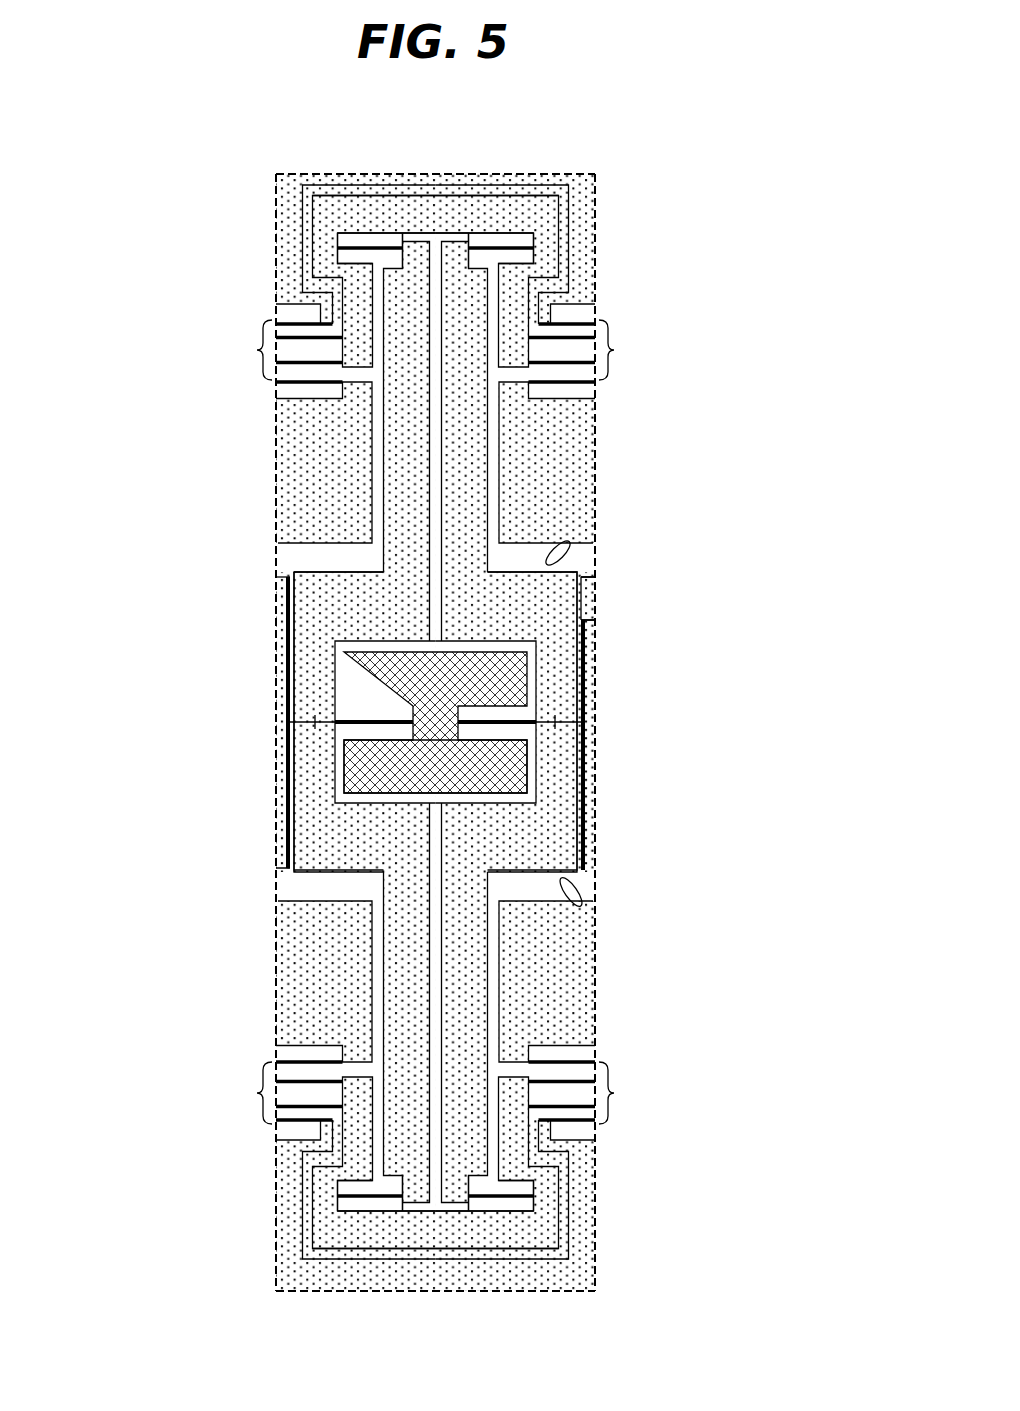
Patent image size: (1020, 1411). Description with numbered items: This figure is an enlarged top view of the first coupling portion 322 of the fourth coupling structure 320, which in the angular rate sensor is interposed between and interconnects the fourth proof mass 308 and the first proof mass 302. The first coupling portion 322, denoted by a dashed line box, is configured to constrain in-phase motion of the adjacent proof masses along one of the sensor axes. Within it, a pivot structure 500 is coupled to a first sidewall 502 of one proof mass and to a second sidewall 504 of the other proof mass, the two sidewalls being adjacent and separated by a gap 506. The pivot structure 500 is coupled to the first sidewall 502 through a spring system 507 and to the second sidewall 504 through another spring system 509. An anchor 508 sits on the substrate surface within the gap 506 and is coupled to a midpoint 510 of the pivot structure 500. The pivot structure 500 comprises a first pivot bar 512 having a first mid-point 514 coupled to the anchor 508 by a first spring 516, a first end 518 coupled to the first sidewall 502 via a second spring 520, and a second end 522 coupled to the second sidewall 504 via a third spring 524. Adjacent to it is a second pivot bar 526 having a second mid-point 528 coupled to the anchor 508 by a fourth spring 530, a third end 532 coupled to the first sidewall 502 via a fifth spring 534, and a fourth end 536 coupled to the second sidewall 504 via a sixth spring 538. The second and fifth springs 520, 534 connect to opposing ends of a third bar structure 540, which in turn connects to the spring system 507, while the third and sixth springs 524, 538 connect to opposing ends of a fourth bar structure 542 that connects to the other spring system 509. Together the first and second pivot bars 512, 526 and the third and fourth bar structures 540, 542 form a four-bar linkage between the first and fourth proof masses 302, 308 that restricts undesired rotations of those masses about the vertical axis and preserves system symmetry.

The fourth coupling structure 320 is at (252, 110).
The first proof mass 302 is at (590, 213).
The fourth proof mass 308 is at (587, 1233).
The first coupling portion 322 is at (797, 1359).
The pivot structure 500 is at (385, 597).
The first sidewall 502 is at (563, 548).
The second sidewall 504 is at (572, 900).
The gap 506 is at (582, 563).
The spring system 507 is at (257, 350).
The anchor 508 is at (515, 762).
The spring system 509 is at (257, 1092).
The midpoint 510 is at (438, 724).
The first pivot bar 512 is at (303, 659).
The first mid-point 514 is at (314, 721).
The first spring 516 is at (377, 722).
The first end 518 is at (418, 248).
The second spring 520 is at (356, 248).
The second end 522 is at (412, 1192).
The third spring 524 is at (352, 1195).
The second pivot bar 526 is at (560, 600).
The second mid-point 528 is at (555, 721).
The fourth spring 530 is at (508, 719).
The third end 532 is at (461, 248).
The fifth spring 534 is at (513, 248).
The fourth end 536 is at (457, 1193).
The sixth spring 538 is at (512, 1193).
The third bar structure 540 is at (445, 203).
The fourth bar structure 542 is at (442, 1235).